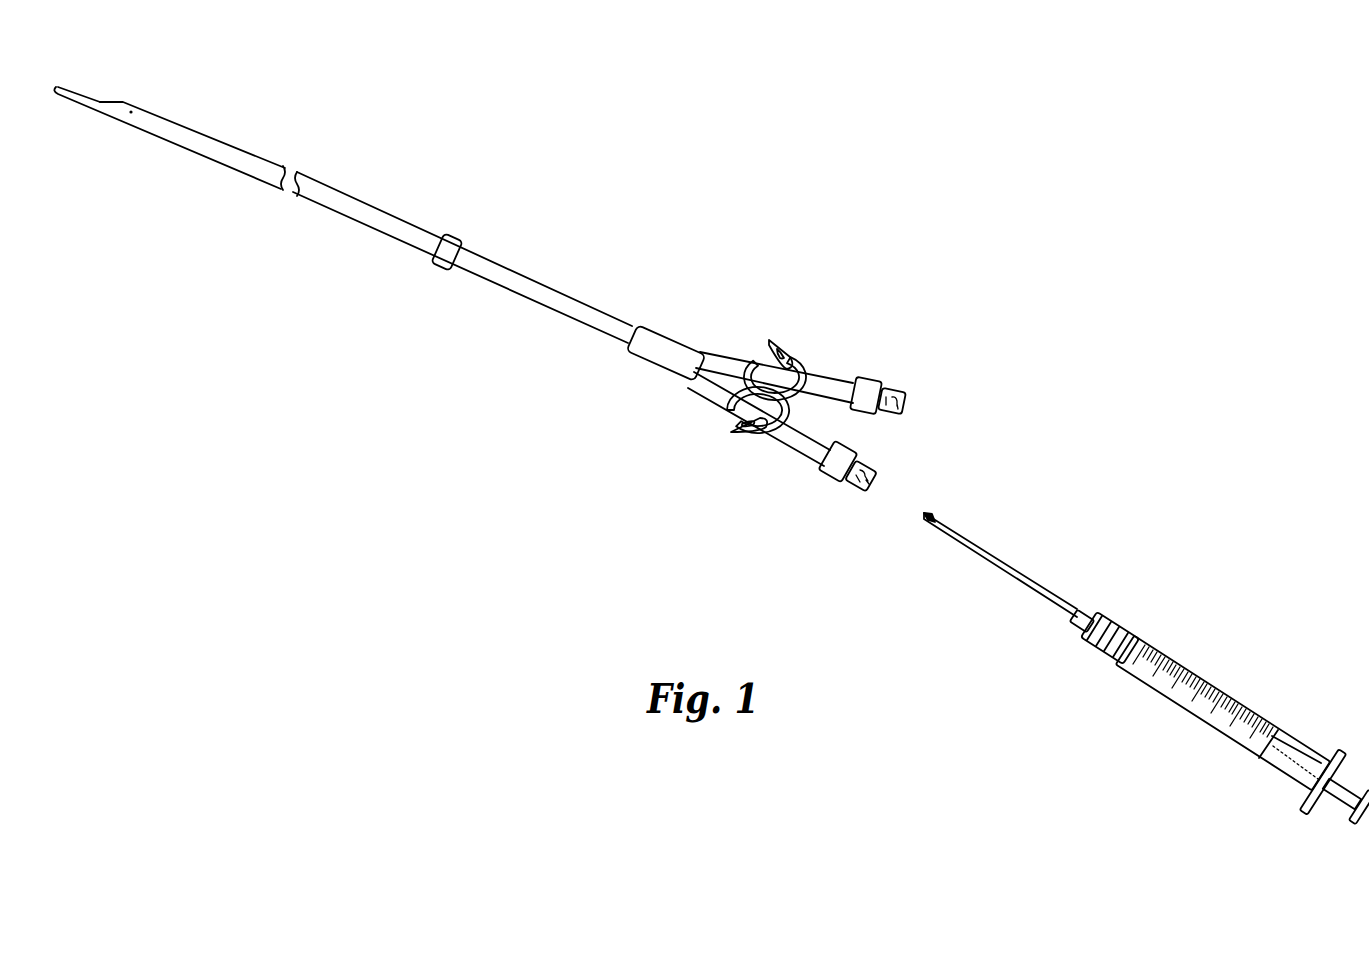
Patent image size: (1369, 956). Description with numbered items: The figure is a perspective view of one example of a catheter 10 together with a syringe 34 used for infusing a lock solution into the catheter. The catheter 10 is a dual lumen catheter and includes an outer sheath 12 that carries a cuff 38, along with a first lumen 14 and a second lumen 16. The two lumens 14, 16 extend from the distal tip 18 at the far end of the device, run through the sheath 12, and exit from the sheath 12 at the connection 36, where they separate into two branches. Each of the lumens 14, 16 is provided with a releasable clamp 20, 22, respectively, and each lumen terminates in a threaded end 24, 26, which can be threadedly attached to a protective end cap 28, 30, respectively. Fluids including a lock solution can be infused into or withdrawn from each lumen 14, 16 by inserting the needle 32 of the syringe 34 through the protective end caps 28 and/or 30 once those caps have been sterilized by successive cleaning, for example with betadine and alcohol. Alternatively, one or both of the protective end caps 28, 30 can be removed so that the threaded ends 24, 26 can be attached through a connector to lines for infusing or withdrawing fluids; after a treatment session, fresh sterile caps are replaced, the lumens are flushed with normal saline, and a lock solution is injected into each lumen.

The catheter 10 is at (270, 158).
The outer sheath 12 is at (357, 199).
The first lumen 14 is at (740, 362).
The second lumen 16 is at (710, 393).
The distal tip 18 is at (80, 95).
The releasable clamp 20 is at (790, 352).
The releasable clamp 22 is at (753, 435).
The threaded end 24 is at (860, 383).
The threaded end 26 is at (820, 458).
The protective end cap 28 is at (901, 391).
The protective end cap 30 is at (872, 467).
The needle 32 is at (998, 559).
The syringe 34 is at (1217, 689).
The connection 36 is at (663, 332).
The cuff 38 is at (452, 238).